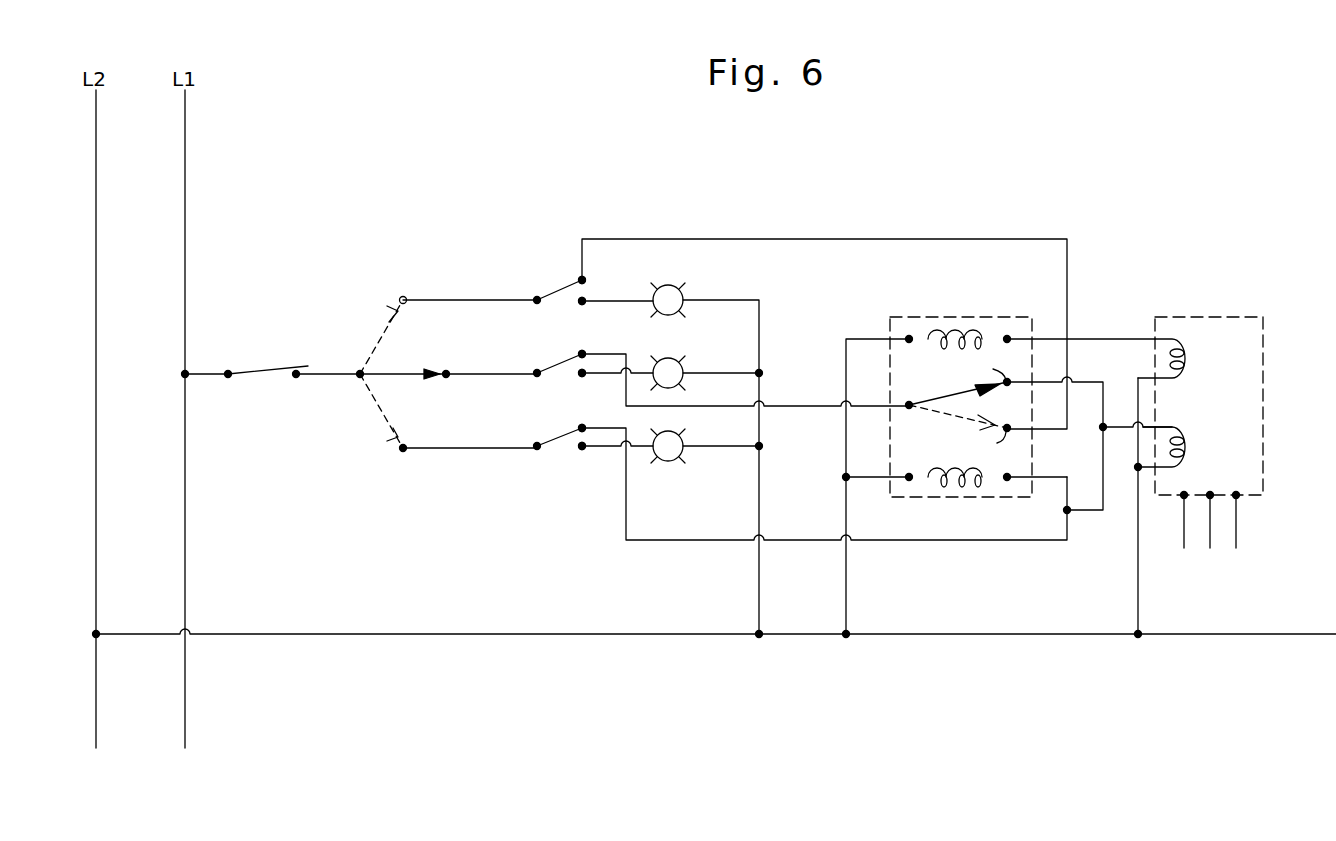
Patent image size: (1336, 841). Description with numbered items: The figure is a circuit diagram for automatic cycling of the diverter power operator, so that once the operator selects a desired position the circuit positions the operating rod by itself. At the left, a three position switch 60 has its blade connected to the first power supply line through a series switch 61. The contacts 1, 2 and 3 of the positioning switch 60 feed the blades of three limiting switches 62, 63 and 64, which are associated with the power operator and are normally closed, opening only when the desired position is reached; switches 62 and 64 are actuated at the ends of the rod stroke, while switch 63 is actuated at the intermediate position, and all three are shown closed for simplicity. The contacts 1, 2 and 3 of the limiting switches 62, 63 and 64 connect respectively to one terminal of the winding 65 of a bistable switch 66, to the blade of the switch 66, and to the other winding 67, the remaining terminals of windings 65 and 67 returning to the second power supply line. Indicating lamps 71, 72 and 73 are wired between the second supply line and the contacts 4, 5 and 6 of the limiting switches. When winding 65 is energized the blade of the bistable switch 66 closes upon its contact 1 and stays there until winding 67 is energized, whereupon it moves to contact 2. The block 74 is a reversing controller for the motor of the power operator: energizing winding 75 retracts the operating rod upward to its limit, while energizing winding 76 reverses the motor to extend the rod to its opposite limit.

The three position switch 60 is at (376, 352).
The series switch 61 is at (262, 378).
The limiting switch 62 is at (554, 285).
The limiting switch 63 is at (558, 357).
The limiting switch 64 is at (557, 435).
The winding 65 is at (950, 330).
The bistable switch 66 is at (999, 441).
The winding 67 is at (940, 485).
The indicating lamp 71 is at (685, 290).
The indicating lamp 72 is at (685, 363).
The indicating lamp 73 is at (685, 437).
The reversing controller 74 is at (1222, 443).
The winding 75 is at (1190, 447).
The winding 76 is at (1190, 357).
The contact 1 is at (584, 283).
The contact 2 is at (584, 352).
The contact 3 is at (584, 427).
The contact 4 is at (585, 305).
The contact 5 is at (584, 378).
The contact 6 is at (584, 452).